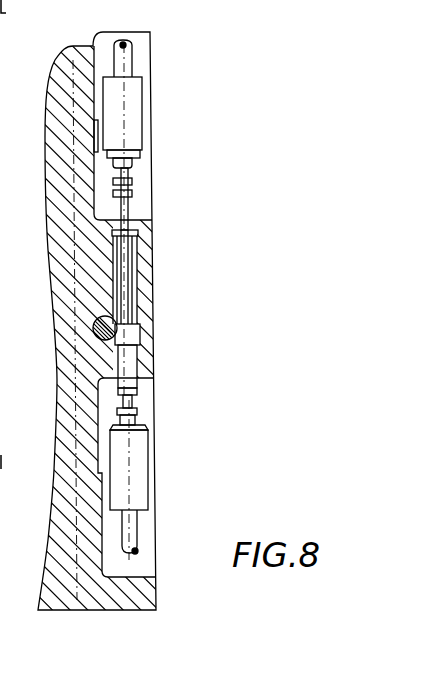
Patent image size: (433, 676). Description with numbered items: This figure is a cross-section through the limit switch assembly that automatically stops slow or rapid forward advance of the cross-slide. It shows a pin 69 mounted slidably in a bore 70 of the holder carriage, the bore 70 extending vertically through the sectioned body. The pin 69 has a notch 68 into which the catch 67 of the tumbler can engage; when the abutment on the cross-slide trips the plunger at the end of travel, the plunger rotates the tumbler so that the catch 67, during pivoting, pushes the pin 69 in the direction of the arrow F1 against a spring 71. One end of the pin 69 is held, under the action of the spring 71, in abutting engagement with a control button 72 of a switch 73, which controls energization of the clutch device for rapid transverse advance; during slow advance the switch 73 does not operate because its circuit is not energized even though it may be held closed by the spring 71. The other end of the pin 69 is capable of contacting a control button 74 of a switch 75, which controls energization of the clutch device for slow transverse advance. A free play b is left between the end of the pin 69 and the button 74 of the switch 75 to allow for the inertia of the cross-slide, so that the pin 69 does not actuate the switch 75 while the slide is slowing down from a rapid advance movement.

The catch 67 is at (98, 325).
The notch 68 is at (122, 352).
The pin 69 is at (127, 373).
The bore 70 is at (136, 258).
The spring 71 is at (133, 245).
The control button 72 is at (130, 423).
The switch 73 is at (130, 465).
The control button 74 is at (130, 164).
The switch 75 is at (135, 100).
The free play b is at (133, 168).
The arrow F1 is at (175, 277).